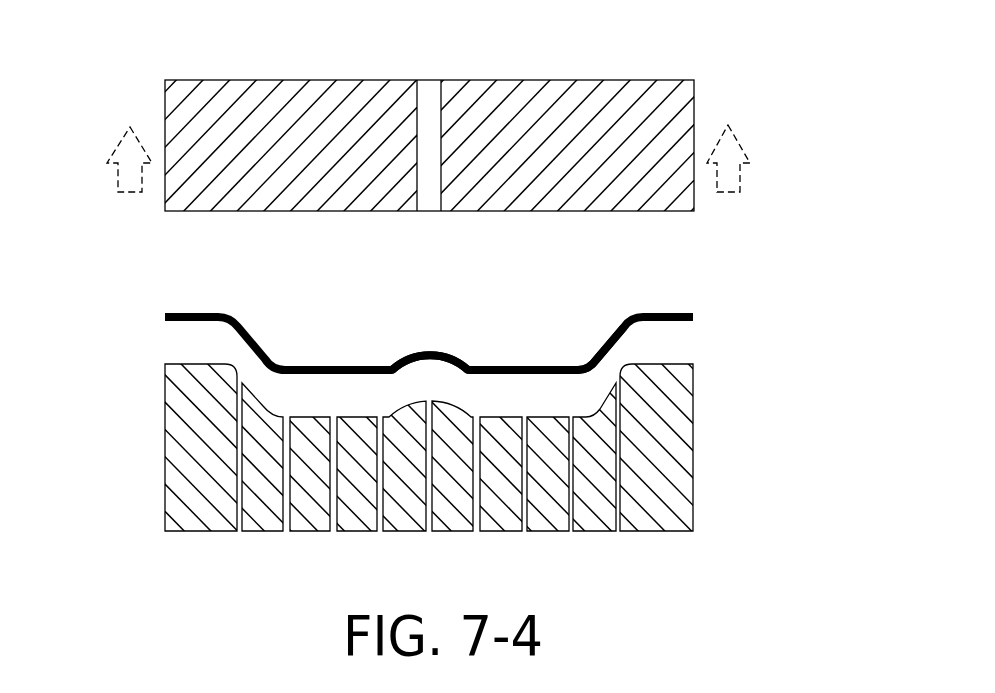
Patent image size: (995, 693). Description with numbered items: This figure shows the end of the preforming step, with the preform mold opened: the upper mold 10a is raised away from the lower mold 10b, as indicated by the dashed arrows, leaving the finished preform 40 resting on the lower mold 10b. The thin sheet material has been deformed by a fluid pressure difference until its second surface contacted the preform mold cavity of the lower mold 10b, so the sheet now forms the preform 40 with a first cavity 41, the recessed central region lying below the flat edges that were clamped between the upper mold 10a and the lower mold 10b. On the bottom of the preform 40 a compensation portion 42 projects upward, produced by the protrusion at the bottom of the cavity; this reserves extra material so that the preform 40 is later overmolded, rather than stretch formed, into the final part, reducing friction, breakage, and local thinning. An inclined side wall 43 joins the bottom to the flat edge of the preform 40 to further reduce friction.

The upper mold 10a is at (197, 110).
The lower mold 10b is at (192, 460).
The preform 40 is at (648, 315).
The first cavity 41 is at (332, 350).
The compensation portion 42 is at (420, 343).
The inclined side wall 43 is at (598, 332).